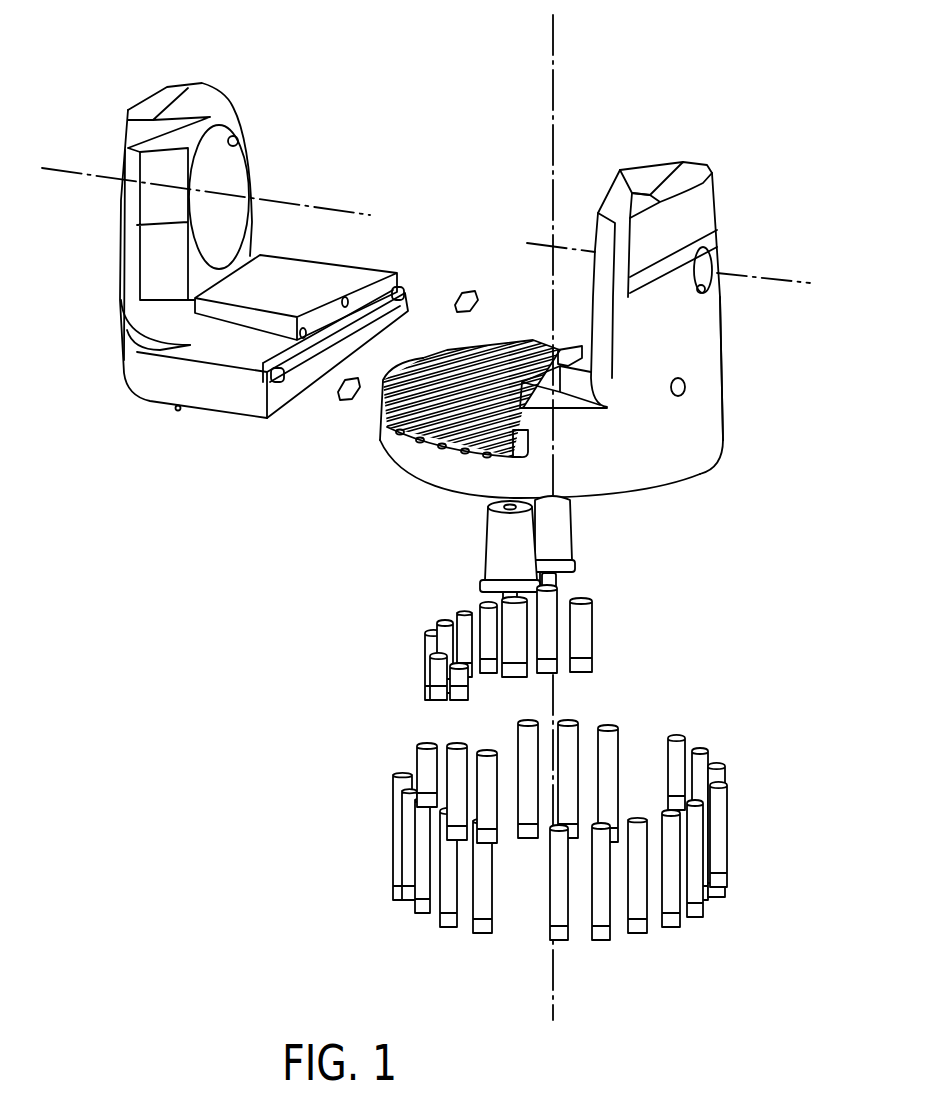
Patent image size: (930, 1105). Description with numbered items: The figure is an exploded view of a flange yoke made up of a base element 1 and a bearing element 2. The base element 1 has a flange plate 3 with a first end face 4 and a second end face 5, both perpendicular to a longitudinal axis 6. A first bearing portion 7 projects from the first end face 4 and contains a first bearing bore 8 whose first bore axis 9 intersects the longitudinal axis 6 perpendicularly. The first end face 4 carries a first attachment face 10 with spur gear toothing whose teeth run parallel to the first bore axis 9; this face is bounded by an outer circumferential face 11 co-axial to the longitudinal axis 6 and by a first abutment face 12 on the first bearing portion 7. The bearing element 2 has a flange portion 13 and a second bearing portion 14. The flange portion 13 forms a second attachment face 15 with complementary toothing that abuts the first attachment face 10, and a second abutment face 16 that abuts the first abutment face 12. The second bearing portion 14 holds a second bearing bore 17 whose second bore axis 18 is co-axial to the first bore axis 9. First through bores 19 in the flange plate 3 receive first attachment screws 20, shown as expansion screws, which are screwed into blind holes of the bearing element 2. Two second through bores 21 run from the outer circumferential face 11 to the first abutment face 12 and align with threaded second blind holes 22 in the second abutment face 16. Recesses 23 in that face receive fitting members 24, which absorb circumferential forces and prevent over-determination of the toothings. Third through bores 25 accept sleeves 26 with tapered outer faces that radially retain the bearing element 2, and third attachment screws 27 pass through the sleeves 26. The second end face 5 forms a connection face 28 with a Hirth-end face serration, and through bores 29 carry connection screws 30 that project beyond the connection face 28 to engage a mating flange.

The base element 1 is at (660, 138).
The bearing element 2 is at (160, 82).
The flange plate 3 is at (465, 485).
The first end face 4 is at (508, 330).
The second end face 5 is at (663, 492).
The longitudinal axis 6 is at (555, 40).
The first bearing portion 7 is at (703, 205).
The first bearing bore 8 is at (698, 296).
The first bore axis 9 is at (805, 282).
The first attachment face 10 is at (500, 355).
The outer circumferential face 11 is at (725, 404).
The first abutment face 12 is at (515, 457).
The flange portion 13 is at (222, 400).
The second bearing portion 14 is at (127, 145).
The second attachment face 15 is at (178, 410).
The second abutment face 16 is at (292, 355).
The second bearing bore 17 is at (240, 142).
The second bore axis 18 is at (262, 207).
The first through bores 19 is at (450, 440).
The first attachment screws 20 is at (578, 628).
The second through bores 21 is at (678, 398).
The second blind holes 22 is at (340, 292).
The recesses 23 is at (404, 291).
The fitting members 24 is at (472, 290).
The third through bores 25 is at (552, 350).
The sleeve 26 is at (548, 517).
The third attachment screws 27 is at (548, 578).
The connection face 28 is at (700, 478).
The through bores 29 is at (390, 410).
The connection screws 30 is at (405, 834).